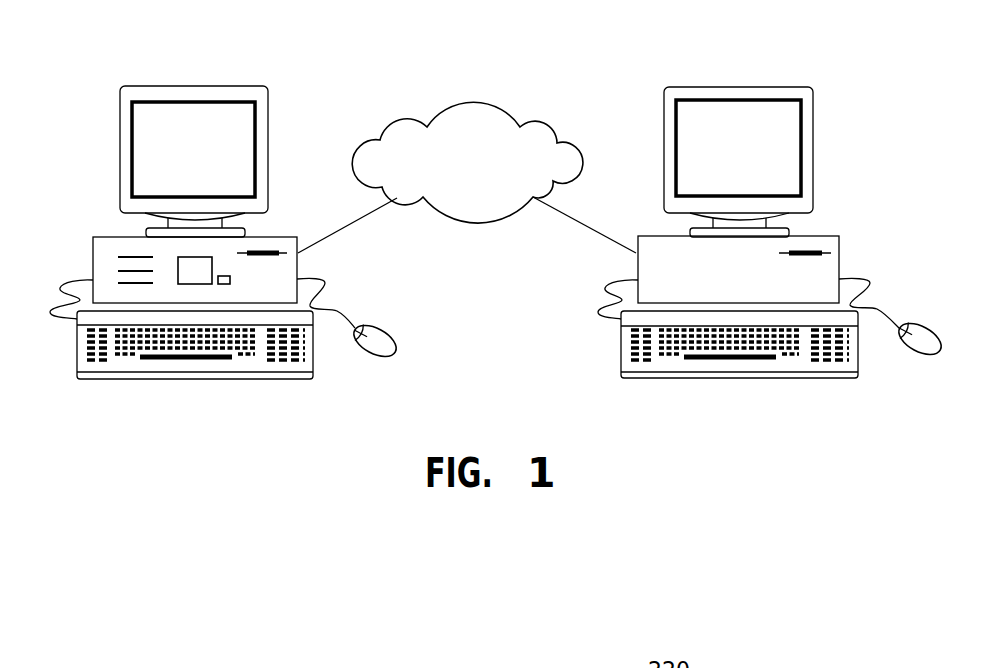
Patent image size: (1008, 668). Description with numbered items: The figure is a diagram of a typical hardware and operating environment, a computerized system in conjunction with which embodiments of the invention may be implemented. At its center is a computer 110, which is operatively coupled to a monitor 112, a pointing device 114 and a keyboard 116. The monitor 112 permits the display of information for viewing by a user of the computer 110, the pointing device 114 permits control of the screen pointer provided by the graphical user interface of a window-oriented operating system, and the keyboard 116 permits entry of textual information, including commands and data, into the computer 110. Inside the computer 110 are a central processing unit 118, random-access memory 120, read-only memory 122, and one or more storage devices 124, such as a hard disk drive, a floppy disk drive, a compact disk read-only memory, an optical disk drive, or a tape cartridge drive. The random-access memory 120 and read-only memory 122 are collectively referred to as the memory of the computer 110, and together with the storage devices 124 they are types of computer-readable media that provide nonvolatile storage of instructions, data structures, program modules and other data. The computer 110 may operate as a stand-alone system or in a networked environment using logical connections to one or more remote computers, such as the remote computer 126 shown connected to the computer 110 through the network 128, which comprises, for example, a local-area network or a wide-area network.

The computer 110 is at (276, 236).
The monitor 112 is at (270, 147).
The pointing device 114 is at (390, 333).
The keyboard 116 is at (197, 380).
The central processing unit 118 is at (231, 279).
The random-access memory 120 is at (119, 257).
The read-only memory 122 is at (119, 283).
The storage devices 124 is at (195, 257).
The remote computer 126 is at (843, 106).
The network 128 is at (535, 126).